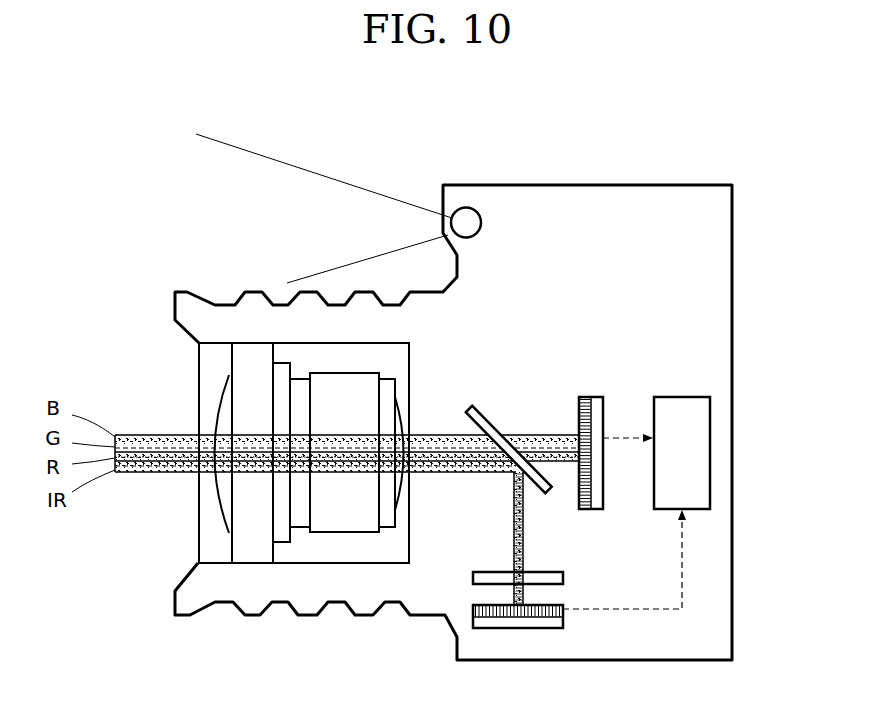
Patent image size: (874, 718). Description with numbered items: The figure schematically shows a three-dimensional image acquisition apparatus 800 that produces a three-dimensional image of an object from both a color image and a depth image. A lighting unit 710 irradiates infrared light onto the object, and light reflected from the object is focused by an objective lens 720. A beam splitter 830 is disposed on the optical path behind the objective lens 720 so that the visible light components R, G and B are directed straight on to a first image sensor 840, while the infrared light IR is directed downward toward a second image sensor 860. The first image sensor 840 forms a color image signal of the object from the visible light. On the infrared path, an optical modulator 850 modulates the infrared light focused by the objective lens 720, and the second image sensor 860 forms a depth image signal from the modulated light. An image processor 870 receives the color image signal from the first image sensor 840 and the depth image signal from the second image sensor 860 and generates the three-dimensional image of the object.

The lighting unit 710 is at (466, 207).
The objective lens 720 is at (217, 501).
The 3D image acquisition apparatus 800 is at (752, 160).
The beam splitter 830 is at (480, 415).
The first image sensor 840 is at (591, 397).
The optical modulator 850 is at (563, 577).
The second image sensor 860 is at (563, 615).
The image processor 870 is at (682, 397).